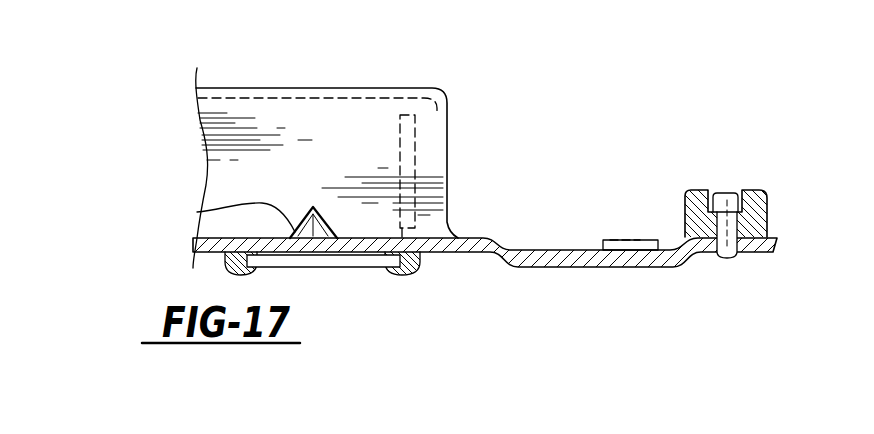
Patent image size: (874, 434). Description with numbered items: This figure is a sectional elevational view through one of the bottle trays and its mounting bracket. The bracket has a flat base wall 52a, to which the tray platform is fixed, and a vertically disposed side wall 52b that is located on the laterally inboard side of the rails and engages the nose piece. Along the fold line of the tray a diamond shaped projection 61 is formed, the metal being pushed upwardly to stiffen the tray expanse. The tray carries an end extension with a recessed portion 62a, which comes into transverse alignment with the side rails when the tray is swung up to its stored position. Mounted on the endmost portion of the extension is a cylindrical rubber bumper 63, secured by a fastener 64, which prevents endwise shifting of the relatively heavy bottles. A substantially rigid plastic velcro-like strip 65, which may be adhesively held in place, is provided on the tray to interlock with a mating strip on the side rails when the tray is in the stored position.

The flat base wall 52a is at (330, 88).
The side wall 52b is at (448, 139).
The diamond shaped projection 61 is at (197, 212).
The recessed portion 62a is at (518, 240).
The velcro-like strip 65 is at (603, 238).
The cylindrical rubber bumper 63 is at (700, 190).
The fastener 64 is at (745, 233).